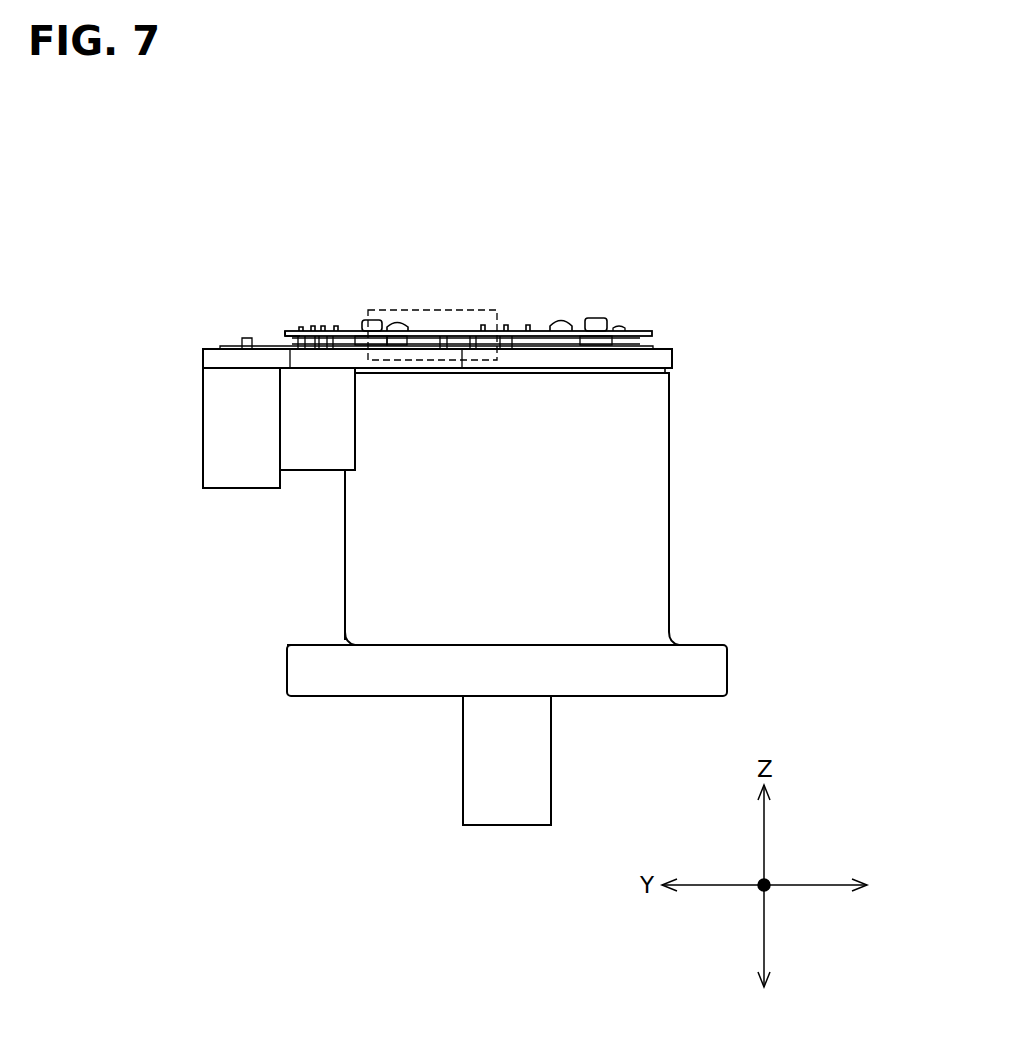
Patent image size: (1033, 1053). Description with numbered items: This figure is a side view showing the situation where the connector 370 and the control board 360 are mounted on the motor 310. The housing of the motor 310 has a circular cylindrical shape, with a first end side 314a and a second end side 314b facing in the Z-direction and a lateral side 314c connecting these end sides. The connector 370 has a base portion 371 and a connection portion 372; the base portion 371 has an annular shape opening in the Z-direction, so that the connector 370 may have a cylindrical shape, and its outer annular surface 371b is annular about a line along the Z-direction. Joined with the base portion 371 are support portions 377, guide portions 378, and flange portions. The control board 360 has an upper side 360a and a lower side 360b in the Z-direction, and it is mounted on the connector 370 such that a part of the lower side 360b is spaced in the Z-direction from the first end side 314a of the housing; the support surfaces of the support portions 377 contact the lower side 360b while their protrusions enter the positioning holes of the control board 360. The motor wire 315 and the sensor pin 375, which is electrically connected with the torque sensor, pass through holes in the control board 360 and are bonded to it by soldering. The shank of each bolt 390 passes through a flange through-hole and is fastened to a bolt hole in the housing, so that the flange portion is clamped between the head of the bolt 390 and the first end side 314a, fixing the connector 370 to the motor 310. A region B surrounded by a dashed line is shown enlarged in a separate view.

The motor 310 is at (680, 460).
The first end side 314a is at (645, 368).
The second end side 314b is at (385, 697).
The lateral side 314c is at (345, 530).
The motor wire 315 is at (528, 330).
The control board 360 is at (652, 334).
The upper side 360a is at (297, 334).
The lower side 360b is at (297, 337).
The connector 370 is at (672, 358).
The base portion 371 is at (665, 372).
The outer annular surface 371b is at (627, 356).
The connection portion 372 is at (203, 380).
The sensor pin 375 is at (300, 326).
The support portions 377 is at (398, 320).
The guide portions 378 is at (515, 336).
The bolt 390 is at (370, 318).
The region B is at (457, 310).